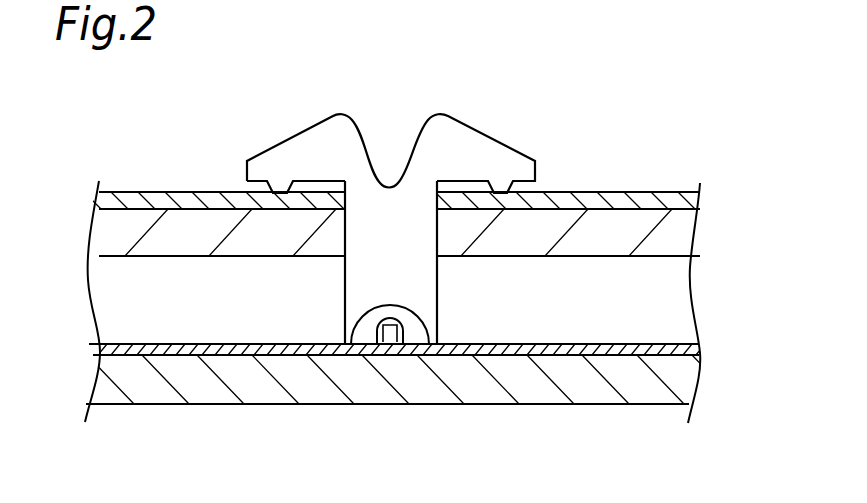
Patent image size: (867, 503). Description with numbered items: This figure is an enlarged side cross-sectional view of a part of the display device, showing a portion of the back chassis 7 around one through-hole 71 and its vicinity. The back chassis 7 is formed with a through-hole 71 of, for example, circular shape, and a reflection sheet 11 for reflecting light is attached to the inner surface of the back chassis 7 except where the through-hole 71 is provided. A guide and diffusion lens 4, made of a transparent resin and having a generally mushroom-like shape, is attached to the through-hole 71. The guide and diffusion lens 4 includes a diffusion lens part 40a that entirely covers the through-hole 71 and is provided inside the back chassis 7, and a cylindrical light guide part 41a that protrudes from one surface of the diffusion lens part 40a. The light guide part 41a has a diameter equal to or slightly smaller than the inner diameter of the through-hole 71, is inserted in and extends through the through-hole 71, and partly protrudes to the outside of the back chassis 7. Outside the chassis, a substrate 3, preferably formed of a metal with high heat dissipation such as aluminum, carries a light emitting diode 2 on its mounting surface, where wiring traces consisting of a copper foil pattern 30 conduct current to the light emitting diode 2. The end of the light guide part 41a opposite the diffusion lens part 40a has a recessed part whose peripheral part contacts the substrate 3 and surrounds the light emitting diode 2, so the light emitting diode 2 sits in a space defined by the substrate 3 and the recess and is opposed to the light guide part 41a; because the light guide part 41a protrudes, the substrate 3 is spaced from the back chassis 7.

The light emitting diode 2 is at (375, 338).
The substrate 3 is at (487, 398).
The guide and diffusion lens 4 is at (308, 183).
The back chassis 7 is at (662, 243).
The reflection sheet 11 is at (612, 198).
The copper foil pattern 30 is at (700, 352).
The diffusion lens part 40a is at (497, 138).
The light guide part 41a is at (355, 282).
The through-hole 71 is at (345, 231).